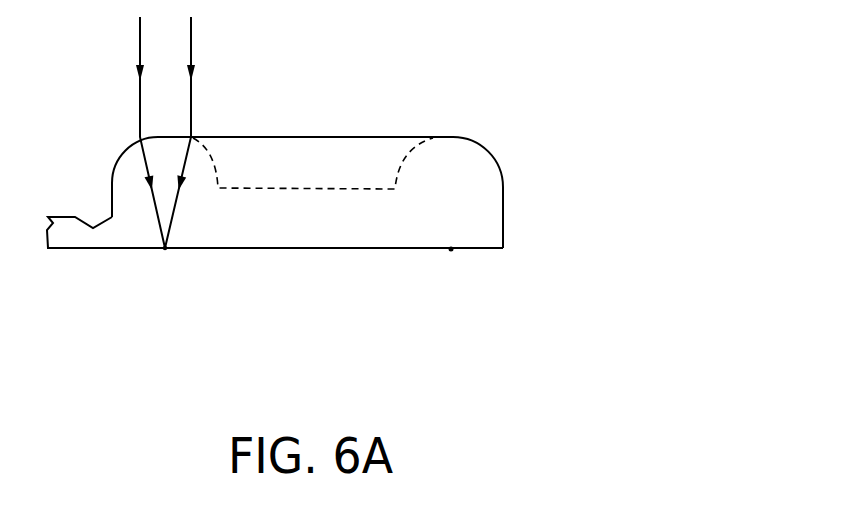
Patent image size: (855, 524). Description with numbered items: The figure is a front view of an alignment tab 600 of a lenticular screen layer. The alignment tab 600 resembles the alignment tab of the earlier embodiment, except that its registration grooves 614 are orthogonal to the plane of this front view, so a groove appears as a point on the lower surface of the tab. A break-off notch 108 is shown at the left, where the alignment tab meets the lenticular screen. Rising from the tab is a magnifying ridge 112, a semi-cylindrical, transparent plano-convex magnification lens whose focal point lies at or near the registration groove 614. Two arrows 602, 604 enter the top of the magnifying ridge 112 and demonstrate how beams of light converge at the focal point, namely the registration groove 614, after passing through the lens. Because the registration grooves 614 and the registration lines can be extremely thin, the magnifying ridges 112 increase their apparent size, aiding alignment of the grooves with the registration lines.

The alignment tab 600 is at (381, 172).
The magnifying ridge 112 is at (118, 163).
The break-off notch 108 is at (93, 229).
The arrow 602 is at (138, 45).
The arrow 604 is at (193, 43).
The registration groove 614 is at (165, 248).